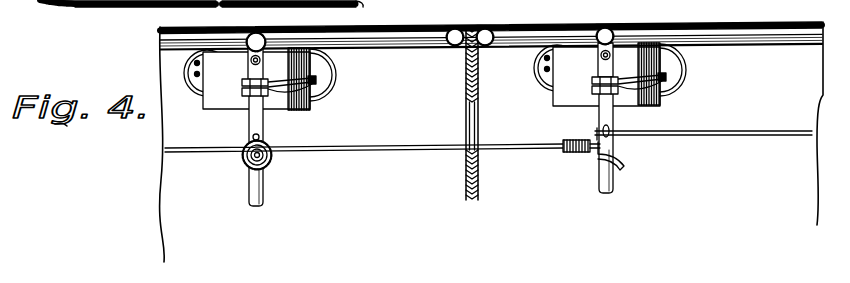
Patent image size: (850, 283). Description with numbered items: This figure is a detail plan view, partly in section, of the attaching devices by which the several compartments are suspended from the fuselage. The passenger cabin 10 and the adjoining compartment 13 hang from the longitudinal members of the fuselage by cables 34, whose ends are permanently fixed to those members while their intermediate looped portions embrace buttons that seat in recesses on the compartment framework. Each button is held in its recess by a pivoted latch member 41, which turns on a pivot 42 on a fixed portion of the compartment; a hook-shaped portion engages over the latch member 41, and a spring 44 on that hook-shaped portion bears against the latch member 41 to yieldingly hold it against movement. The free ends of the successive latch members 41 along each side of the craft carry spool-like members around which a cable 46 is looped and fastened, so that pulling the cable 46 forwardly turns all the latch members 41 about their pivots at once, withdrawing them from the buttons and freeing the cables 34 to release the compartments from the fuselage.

The passenger cabin 10 is at (397, 28).
The compartment 13 is at (578, 23).
The cables 34 is at (322, 84).
The pivoted latch member 41 is at (267, 124).
The pivot 42 is at (249, 62).
The spring 44 is at (247, 92).
The cable 46 is at (400, 147).